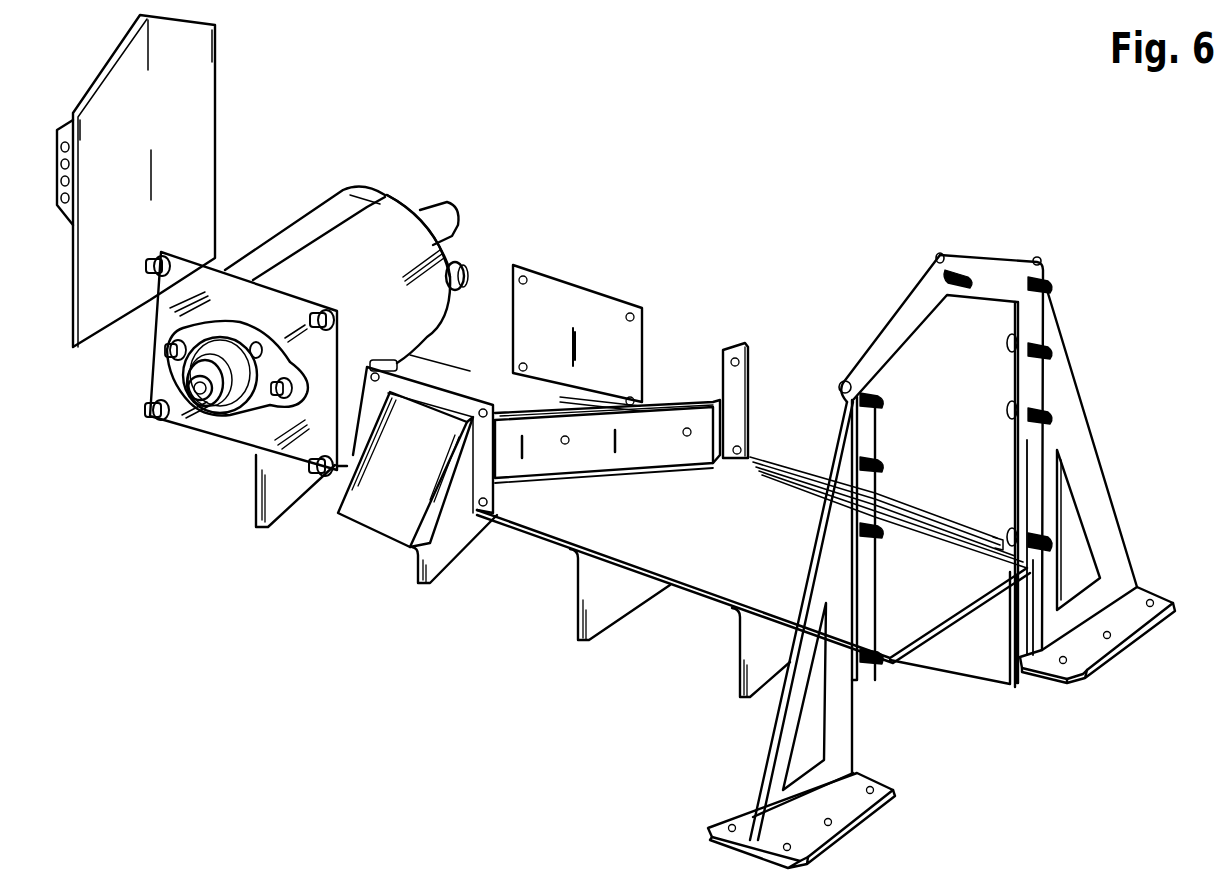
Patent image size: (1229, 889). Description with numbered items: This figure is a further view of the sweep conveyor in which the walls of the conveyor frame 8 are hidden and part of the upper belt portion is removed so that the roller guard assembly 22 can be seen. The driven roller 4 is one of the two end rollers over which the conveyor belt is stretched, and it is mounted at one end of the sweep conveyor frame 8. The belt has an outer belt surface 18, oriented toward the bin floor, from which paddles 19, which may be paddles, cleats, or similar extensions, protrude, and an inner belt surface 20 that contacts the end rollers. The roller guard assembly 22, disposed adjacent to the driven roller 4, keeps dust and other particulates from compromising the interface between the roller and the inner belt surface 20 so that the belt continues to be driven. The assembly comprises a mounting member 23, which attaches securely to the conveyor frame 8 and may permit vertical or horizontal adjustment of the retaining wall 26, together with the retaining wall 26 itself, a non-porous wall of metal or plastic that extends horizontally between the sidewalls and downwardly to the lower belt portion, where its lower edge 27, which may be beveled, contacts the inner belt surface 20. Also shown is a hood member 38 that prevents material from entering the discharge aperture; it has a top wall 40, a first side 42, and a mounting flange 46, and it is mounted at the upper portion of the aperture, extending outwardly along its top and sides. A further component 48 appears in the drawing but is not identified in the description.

The driven roller 4 is at (360, 309).
The sweep conveyor frame 8 is at (969, 258).
The outer belt surface 18 is at (291, 243).
The paddles 19 is at (600, 627).
The inner belt surface 20 is at (713, 556).
The roller guard assembly 22 is at (688, 360).
The mounting member 23 is at (750, 380).
The retaining wall 26 is at (633, 454).
The lower edge 27 is at (600, 476).
The hood member 38 is at (342, 540).
The top wall 40 is at (400, 476).
The first side 42 is at (446, 506).
The mounting flange 46 is at (437, 381).
The mounting plate 48 is at (591, 361).